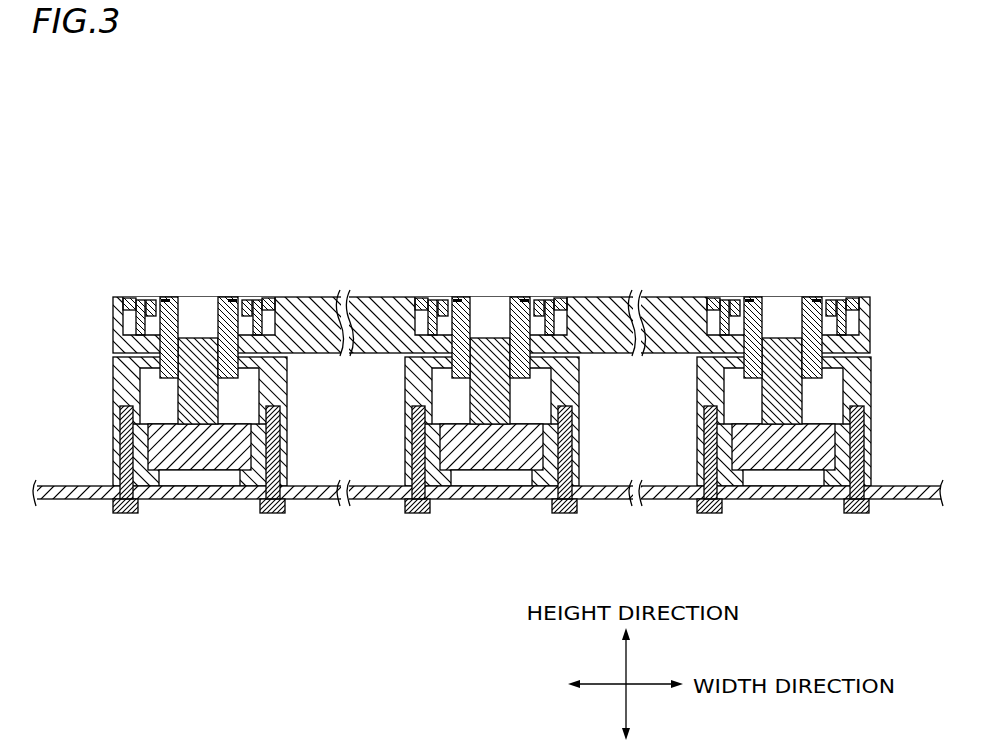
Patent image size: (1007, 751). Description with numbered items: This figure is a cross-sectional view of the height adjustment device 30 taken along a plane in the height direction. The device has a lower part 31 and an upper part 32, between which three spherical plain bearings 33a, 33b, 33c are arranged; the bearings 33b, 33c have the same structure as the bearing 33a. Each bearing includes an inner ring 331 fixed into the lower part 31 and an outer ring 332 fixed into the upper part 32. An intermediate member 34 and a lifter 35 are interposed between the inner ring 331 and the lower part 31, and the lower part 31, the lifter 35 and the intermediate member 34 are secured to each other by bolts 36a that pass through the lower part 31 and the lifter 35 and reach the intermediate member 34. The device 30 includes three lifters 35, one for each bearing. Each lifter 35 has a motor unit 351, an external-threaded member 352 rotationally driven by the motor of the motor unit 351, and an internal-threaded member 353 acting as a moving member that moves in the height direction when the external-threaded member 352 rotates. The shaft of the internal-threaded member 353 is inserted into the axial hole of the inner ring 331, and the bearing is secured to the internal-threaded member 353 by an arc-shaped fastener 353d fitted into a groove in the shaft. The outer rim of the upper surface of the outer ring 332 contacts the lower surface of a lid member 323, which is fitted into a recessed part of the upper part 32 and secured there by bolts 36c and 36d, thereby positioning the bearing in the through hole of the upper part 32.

The height adjustment device 30 is at (874, 160).
The lower part 31 is at (55, 500).
The upper part 32 is at (113, 330).
The lid member 323 is at (128, 297).
The spherical plain bearing 33a is at (159, 284).
The spherical plain bearing 33b is at (743, 284).
The spherical plain bearing 33c is at (451, 284).
The inner ring 331 is at (252, 297).
The outer ring 332 is at (247, 297).
The intermediate member 34 is at (113, 380).
The lifter 35 is at (171, 484).
The motor unit 351 is at (202, 460).
The external-threaded member 352 is at (198, 340).
The internal-threaded member 353 is at (225, 297).
The arc-shaped fastener 353d is at (170, 297).
The bolt 36a is at (125, 513).
The bolt 36c is at (123, 297).
The bolt 36d is at (257, 297).